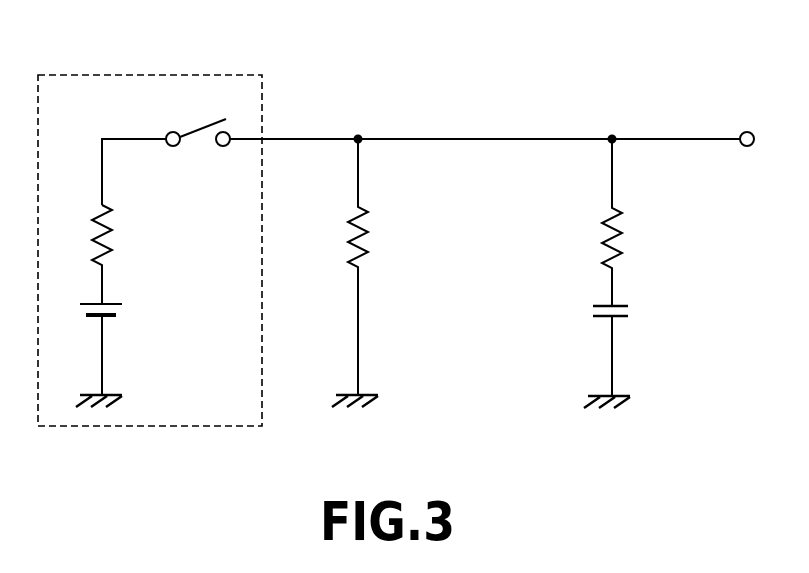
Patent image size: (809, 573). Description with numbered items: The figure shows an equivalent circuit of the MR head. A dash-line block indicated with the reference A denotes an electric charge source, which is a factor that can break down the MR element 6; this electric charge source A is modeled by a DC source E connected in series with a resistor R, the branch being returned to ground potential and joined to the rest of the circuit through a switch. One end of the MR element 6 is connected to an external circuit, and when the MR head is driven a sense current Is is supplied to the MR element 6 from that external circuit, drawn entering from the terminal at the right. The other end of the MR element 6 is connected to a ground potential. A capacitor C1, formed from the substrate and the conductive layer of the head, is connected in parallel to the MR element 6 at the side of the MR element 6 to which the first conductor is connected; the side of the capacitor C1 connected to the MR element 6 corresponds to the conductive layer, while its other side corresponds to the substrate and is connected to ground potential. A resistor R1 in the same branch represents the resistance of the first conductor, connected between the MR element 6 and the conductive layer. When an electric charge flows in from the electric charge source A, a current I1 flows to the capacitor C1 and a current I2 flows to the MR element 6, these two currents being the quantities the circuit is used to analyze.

The electric charge source A is at (119, 75).
The resistor R is at (110, 239).
The DC source E is at (128, 306).
The MR element 6 is at (370, 223).
The resistor R1 is at (620, 242).
The capacitor C1 is at (630, 298).
The current I1 is at (592, 190).
The current I2 is at (340, 190).
The sense current Is is at (727, 122).